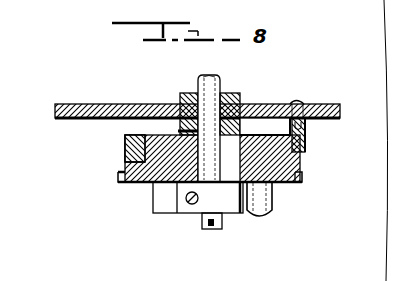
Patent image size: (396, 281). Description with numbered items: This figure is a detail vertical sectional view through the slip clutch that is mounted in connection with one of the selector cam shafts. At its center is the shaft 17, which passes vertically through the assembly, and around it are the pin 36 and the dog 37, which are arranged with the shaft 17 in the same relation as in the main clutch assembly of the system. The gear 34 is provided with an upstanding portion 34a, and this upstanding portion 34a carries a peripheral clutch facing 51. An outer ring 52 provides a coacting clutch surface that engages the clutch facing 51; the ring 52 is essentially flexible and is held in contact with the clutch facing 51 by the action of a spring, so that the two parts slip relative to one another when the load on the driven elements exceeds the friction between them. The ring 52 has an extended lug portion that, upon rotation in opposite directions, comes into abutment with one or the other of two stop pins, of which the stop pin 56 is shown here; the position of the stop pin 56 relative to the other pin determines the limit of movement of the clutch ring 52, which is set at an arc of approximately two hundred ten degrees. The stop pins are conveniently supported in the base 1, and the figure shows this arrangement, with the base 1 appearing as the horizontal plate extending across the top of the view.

The base 1 is at (86, 118).
The upstanding portion 34a is at (157, 135).
The shaft 17 is at (212, 80).
The peripheral clutch facing 51 is at (270, 148).
The stop pin 56 is at (324, 103).
The outer ring 52 is at (306, 149).
The gear 34 is at (302, 176).
The dog 37 is at (166, 207).
The pin 36 is at (268, 215).